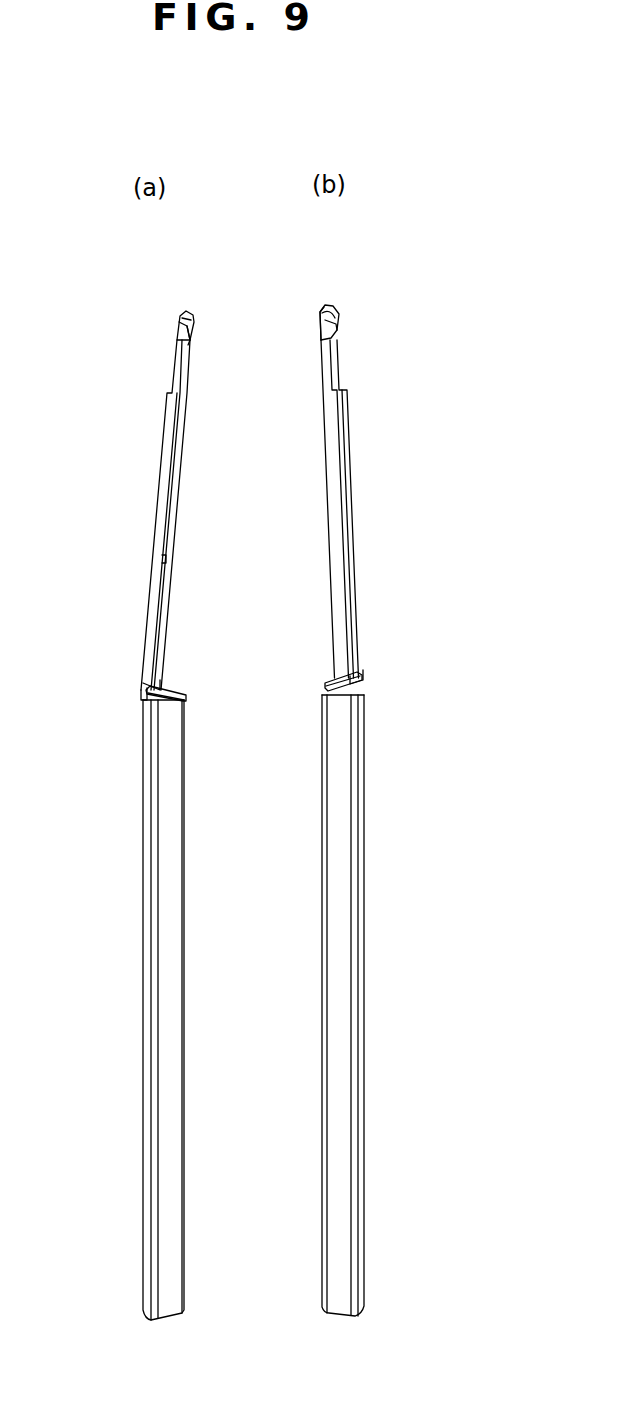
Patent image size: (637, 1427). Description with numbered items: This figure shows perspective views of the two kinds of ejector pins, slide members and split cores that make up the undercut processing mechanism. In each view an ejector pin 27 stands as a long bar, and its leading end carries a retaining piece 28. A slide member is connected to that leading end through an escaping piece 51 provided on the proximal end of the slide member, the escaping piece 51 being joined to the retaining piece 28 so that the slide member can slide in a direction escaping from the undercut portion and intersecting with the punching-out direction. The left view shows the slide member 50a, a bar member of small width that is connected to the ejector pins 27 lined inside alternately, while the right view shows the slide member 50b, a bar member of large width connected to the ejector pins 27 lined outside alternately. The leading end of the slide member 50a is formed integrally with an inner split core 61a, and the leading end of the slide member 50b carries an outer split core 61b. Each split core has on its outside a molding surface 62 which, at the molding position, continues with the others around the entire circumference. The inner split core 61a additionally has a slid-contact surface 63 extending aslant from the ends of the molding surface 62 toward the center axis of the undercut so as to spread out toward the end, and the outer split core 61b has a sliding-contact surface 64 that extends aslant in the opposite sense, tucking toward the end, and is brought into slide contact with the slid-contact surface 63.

The ejector pin 27 is at (147, 958).
The retaining piece 28 is at (177, 690).
The slide member 50a is at (167, 473).
The slide member 50b is at (350, 517).
The escaping piece 51 is at (145, 697).
The inner split core 61a is at (184, 313).
The outer split core 61b is at (328, 310).
The molding surface 62 is at (178, 323).
The slid-contact surface 63 is at (193, 333).
The sliding-contact surface 64 is at (322, 320).